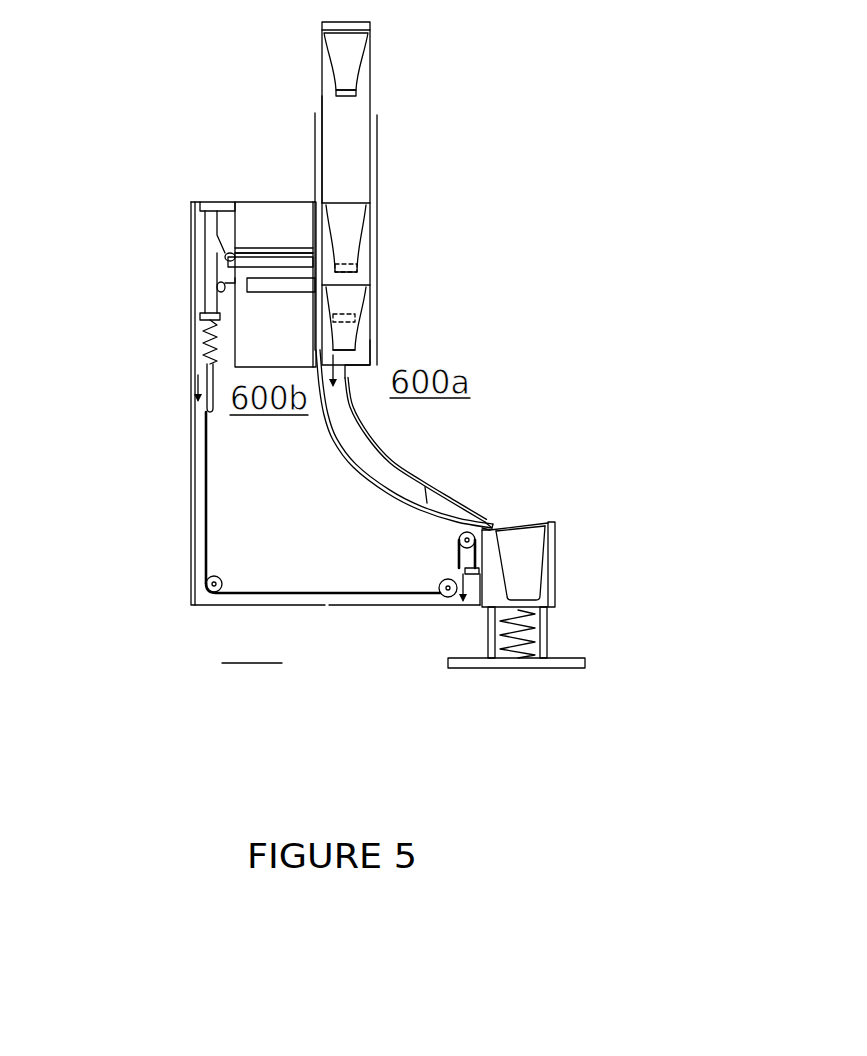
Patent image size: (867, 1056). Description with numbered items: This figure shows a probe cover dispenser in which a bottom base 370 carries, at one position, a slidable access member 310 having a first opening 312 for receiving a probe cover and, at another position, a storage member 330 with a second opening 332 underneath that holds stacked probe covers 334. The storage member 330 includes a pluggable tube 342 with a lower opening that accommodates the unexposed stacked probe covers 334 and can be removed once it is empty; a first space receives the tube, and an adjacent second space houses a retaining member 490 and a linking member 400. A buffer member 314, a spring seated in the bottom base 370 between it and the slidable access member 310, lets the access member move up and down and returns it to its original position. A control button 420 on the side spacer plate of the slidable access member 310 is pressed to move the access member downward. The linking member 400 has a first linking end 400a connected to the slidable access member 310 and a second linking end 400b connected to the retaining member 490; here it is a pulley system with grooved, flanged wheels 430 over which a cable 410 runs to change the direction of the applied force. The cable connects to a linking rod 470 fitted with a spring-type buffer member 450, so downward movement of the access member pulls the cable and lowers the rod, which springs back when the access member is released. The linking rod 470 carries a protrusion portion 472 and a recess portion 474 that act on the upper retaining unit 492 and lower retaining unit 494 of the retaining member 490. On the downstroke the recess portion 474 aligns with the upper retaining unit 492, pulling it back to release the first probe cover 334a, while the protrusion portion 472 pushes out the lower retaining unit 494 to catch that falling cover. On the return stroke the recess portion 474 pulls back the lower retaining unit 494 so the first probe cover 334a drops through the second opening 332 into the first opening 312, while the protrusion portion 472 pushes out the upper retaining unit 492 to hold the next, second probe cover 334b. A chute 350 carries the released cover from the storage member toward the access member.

The slidable access member 310 is at (555, 570).
The first opening 312 is at (523, 547).
The buffer member 314 is at (527, 640).
The storage member 330 is at (377, 163).
The second opening 332 is at (357, 353).
The stacked probe covers 334 is at (365, 53).
The first probe cover 334a is at (367, 252).
The second probe cover 334b is at (372, 200).
The pluggable tube 342 is at (372, 98).
The chute 350 is at (377, 450).
The bottom base 370 is at (498, 668).
The linking member 400 is at (335, 434).
The first linking end 400a is at (495, 528).
The second linking end 400b is at (190, 296).
The cable 410 is at (327, 593).
The control button 420 is at (466, 602).
The wheel 430 is at (205, 583).
The buffer member 450 is at (205, 355).
The linking rod 470 is at (200, 232).
The protrusion portion 472 is at (228, 262).
The recess portion 474 is at (233, 254).
The retaining member 490 is at (212, 100).
The upper retaining unit 492 is at (265, 263).
The lower retaining unit 494 is at (290, 280).